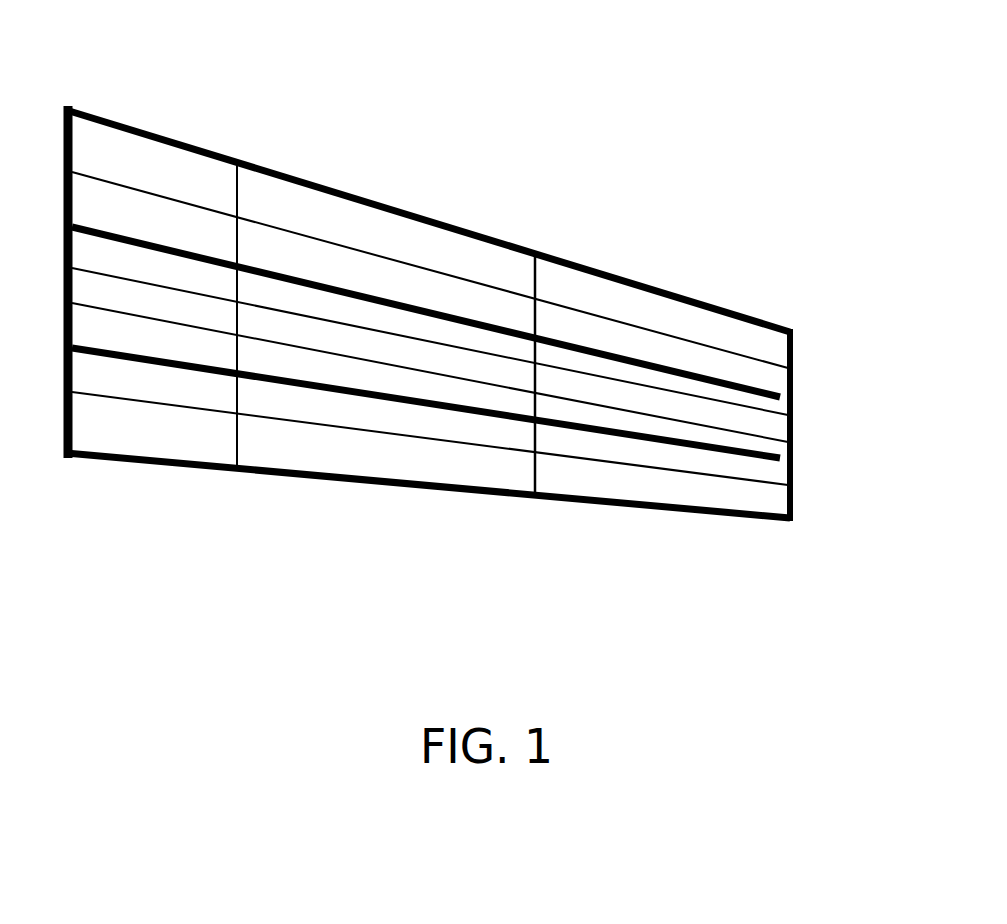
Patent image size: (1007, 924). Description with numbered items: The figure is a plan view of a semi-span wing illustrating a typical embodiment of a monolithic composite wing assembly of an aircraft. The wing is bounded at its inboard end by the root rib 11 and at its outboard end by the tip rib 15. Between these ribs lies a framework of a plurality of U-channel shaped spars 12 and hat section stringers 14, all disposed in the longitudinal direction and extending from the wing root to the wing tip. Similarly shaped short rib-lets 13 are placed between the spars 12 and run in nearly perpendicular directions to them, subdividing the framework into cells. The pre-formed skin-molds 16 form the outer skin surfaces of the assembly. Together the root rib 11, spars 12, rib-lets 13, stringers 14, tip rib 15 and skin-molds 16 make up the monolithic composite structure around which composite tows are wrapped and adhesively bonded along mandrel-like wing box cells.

The root rib 11 is at (74, 132).
The spars 12 is at (120, 240).
The short rib-lets 13 is at (537, 408).
The hat section stringer 14 is at (323, 320).
The tip rib 15 is at (793, 360).
The pre-formed skin-molds 16 is at (377, 373).